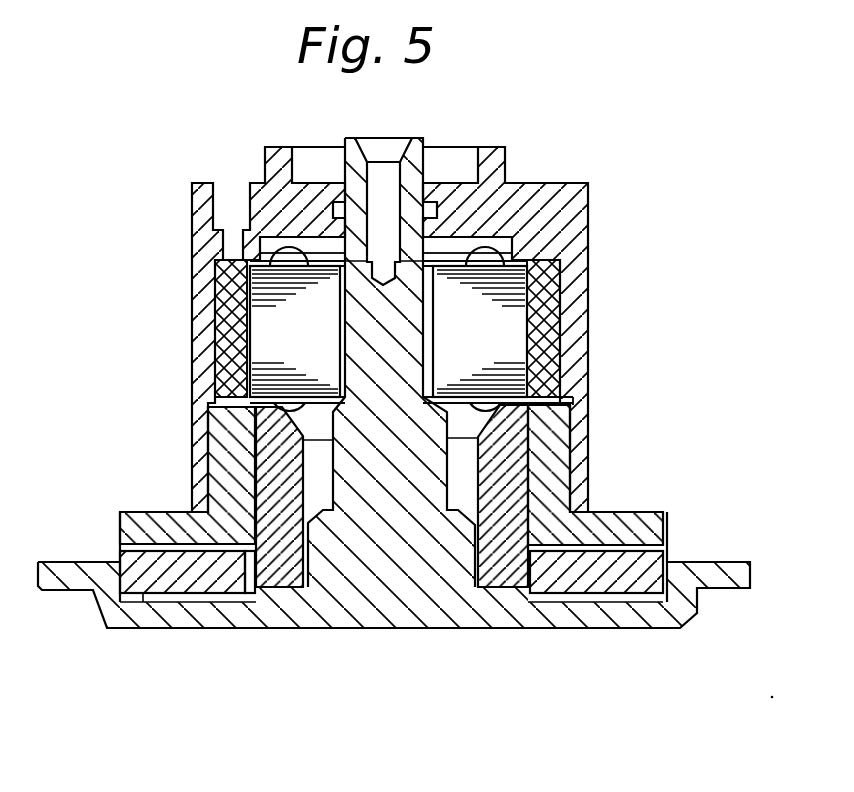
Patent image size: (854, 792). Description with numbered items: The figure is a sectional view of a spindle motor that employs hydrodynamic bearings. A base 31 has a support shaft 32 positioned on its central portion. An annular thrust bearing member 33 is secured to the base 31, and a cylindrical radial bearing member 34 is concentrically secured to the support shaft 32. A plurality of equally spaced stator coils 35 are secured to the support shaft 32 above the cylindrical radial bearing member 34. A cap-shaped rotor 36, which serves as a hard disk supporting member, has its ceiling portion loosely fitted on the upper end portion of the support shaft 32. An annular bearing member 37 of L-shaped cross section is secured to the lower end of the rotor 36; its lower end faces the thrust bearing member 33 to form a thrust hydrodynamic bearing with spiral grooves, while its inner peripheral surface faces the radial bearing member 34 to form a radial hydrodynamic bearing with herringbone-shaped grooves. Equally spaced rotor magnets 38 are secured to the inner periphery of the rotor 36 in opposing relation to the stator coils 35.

The base 31 is at (437, 618).
The support shaft 32 is at (212, 428).
The annular thrust bearing member 33 is at (133, 563).
The cylindrical radial bearing member 34 is at (516, 470).
The stator coils 35 is at (250, 292).
The rotor 36 is at (270, 203).
The annular bearing member 37 is at (347, 465).
The rotor magnets 38 is at (232, 345).